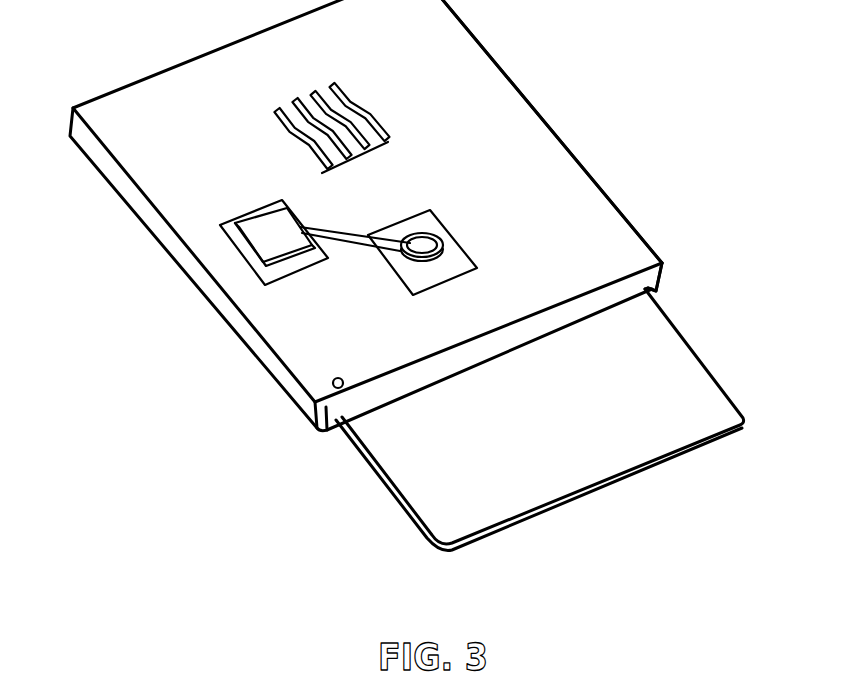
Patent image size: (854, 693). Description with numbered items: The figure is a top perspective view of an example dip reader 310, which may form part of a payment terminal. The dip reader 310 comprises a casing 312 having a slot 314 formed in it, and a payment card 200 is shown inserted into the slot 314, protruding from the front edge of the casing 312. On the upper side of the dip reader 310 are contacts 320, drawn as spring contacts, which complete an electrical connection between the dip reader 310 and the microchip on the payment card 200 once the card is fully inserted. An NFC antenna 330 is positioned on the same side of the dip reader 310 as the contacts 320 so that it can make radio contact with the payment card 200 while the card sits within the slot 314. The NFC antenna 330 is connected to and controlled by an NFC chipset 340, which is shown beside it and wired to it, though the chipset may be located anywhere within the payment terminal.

The payment card 200 is at (660, 445).
The dip reader 310 is at (218, 405).
The casing 312 is at (550, 150).
The slot 314 is at (648, 290).
The contacts 320 is at (388, 142).
The NFC antenna 330 is at (443, 245).
The NFC chipset 340 is at (270, 233).